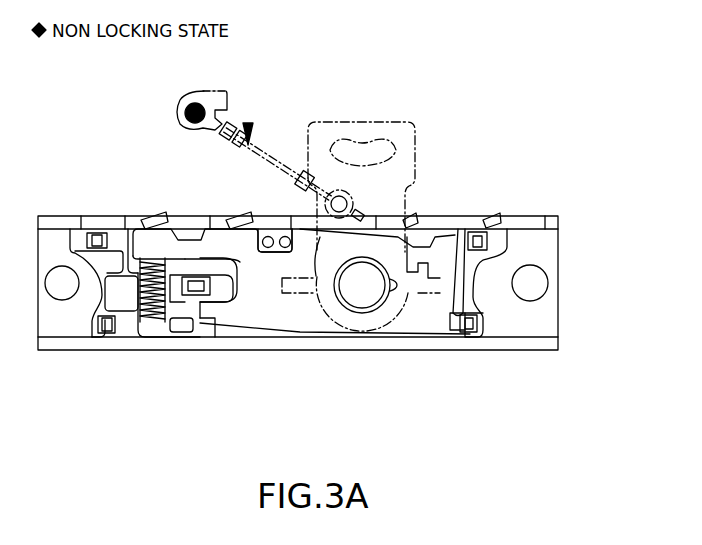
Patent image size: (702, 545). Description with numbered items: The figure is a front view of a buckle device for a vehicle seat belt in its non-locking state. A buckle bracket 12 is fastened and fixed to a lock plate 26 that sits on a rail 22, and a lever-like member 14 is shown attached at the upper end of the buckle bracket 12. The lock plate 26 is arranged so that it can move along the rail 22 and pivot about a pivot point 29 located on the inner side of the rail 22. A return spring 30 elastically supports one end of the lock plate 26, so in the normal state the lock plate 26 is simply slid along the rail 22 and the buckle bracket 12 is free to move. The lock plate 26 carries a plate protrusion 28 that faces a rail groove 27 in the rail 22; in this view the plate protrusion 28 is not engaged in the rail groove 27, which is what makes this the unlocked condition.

The buckle bracket 12 is at (407, 143).
The lever 14 is at (250, 122).
The rail 22 is at (487, 346).
The lock plate 26 is at (278, 305).
The rail groove 27 is at (452, 243).
The plate protrusion 28 is at (483, 245).
The pivot point 29 is at (270, 237).
The return spring 30 is at (155, 320).